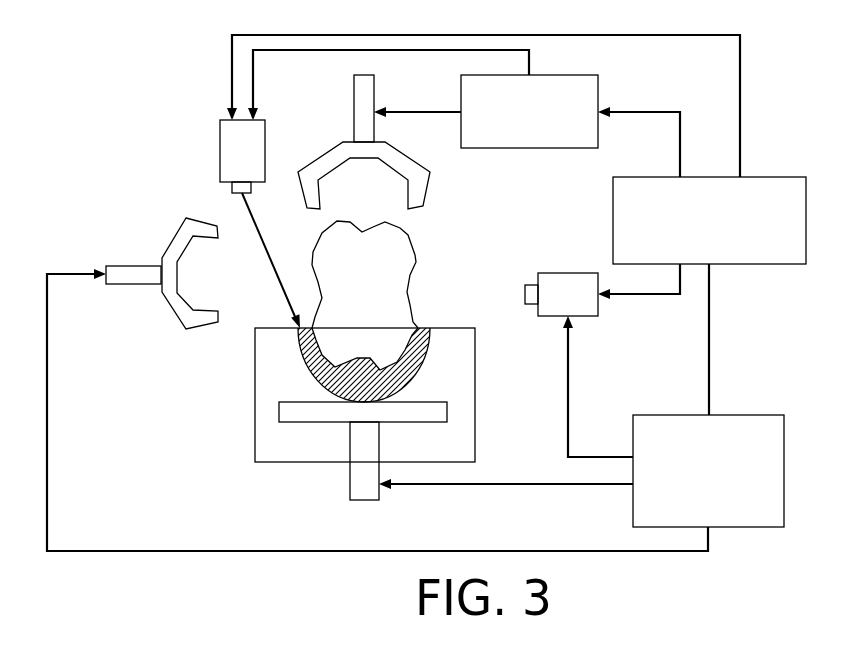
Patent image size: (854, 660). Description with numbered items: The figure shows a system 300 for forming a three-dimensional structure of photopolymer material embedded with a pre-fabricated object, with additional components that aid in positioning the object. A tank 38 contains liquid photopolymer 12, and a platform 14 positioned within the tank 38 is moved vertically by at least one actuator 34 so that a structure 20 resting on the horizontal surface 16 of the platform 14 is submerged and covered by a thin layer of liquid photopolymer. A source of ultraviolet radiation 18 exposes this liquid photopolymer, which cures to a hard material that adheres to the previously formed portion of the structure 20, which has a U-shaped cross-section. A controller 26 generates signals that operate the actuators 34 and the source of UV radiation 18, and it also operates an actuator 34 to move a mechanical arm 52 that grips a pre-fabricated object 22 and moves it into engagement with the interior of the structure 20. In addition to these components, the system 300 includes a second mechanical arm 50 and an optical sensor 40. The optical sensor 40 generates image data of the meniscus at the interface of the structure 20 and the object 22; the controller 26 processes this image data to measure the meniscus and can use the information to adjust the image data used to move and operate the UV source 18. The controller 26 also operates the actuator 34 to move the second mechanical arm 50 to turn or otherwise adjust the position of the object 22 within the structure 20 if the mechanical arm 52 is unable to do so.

The liquid photopolymer 12 is at (458, 440).
The platform 14 is at (350, 480).
The horizontal surface 16 is at (449, 413).
The source of ultraviolet radiation 18 is at (220, 152).
The three-dimensional structure 20 is at (423, 328).
The object 22 is at (411, 283).
The controller 26 is at (770, 177).
The actuator 34 is at (599, 90).
The tank 38 is at (475, 378).
The optical sensor 40 is at (568, 273).
The second mechanical arm 50 is at (167, 305).
The mechanical arm 52 is at (427, 189).
The system 300 is at (238, 423).